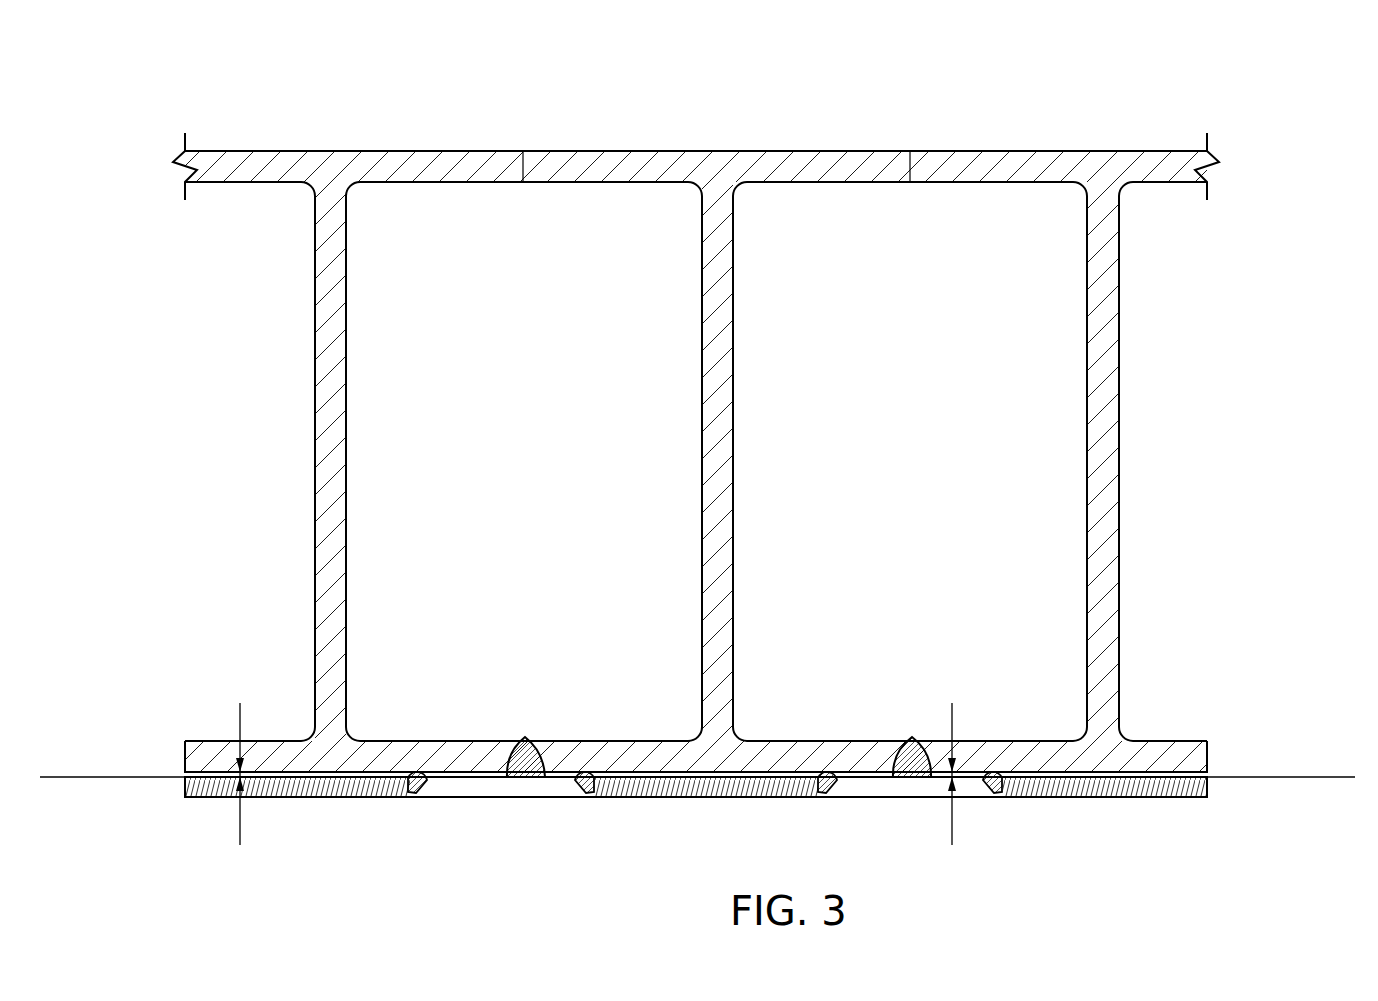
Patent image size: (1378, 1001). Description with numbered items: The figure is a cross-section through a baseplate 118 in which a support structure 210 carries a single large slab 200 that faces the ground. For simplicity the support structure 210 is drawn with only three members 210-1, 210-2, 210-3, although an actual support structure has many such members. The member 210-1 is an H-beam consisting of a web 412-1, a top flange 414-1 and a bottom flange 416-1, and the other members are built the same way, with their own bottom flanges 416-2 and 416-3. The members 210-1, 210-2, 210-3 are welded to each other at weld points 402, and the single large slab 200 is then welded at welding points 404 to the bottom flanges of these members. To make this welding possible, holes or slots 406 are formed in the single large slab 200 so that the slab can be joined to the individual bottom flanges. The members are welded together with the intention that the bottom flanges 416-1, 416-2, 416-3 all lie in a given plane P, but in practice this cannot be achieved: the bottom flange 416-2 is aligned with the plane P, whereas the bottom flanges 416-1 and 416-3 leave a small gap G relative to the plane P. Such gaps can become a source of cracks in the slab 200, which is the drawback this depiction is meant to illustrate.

The baseplate 118 is at (1250, 70).
The single large slab 200 is at (1127, 798).
The support structure 210 is at (252, 462).
The member 210-1 is at (1134, 460).
The member 210-2 is at (747, 461).
The member 210-3 is at (360, 460).
The web 412-1 is at (1110, 313).
The top flange 414-1 is at (1060, 153).
The bottom flange 416-1 is at (1182, 752).
The bottom flange 416-2 is at (800, 752).
The bottom flange 416-3 is at (417, 752).
The weld points 402 is at (524, 738).
The welding points 404 is at (586, 794).
The holes or slots 406 is at (440, 798).
The plane P is at (118, 778).
The gap G is at (242, 820).